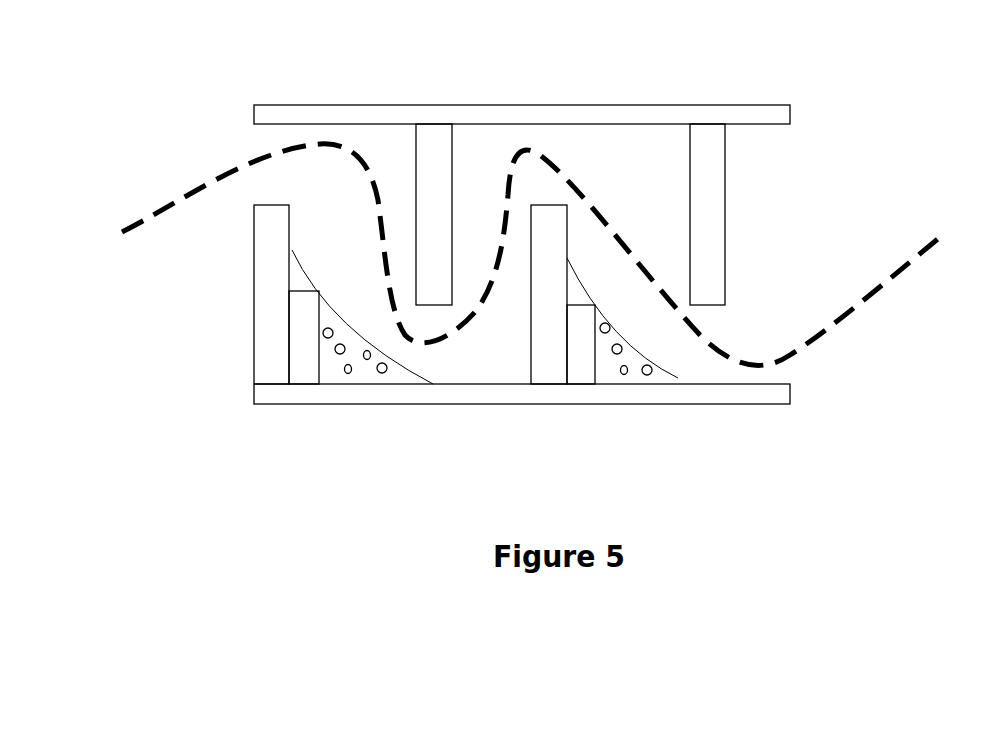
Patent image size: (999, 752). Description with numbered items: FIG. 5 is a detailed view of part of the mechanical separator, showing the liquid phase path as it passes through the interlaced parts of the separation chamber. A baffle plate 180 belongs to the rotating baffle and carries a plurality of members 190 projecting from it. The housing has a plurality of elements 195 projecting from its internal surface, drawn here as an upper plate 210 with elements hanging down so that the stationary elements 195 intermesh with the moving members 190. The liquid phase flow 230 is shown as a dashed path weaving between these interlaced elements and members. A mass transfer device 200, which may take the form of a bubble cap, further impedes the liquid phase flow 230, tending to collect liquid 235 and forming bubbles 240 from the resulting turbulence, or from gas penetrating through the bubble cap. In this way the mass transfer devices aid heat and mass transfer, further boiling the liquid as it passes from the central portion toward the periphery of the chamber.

The top plate 210 is at (790, 112).
The elements 195 is at (725, 213).
The members 190 is at (254, 339).
The mass transfer device 200 is at (564, 378).
The baffle plate 180 is at (793, 395).
The liquid 235 is at (667, 368).
The bubbles 240 is at (622, 343).
The liquid phase flow 230 is at (497, 255).